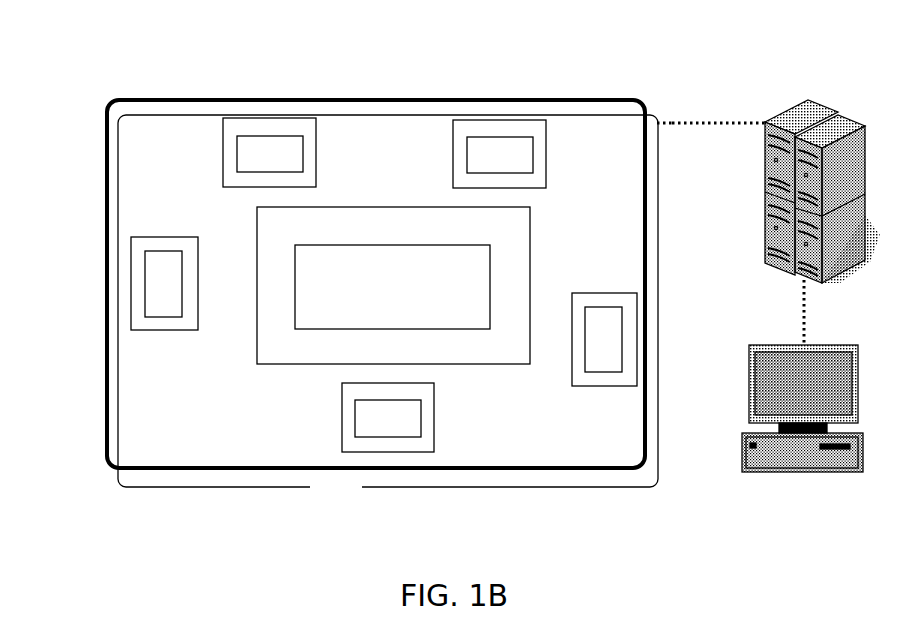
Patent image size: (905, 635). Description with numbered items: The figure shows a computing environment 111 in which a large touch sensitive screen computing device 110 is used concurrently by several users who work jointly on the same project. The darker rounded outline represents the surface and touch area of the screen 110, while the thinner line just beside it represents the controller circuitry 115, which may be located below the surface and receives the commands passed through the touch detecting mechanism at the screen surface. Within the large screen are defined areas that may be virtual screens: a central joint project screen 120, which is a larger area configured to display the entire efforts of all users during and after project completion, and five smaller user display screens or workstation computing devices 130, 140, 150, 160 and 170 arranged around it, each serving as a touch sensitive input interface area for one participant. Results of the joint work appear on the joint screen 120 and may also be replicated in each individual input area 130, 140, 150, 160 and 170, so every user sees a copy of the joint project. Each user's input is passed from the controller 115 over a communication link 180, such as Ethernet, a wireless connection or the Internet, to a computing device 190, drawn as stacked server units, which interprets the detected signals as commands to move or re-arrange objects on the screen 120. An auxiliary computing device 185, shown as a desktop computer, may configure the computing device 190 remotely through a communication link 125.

The computing environment 111 is at (55, 73).
The large touch sensitive screen computing device 110 is at (117, 99).
The workstation computing device 130 is at (282, 117).
The workstation computing device 140 is at (507, 120).
The joint project screen 120 is at (392, 207).
The workstation computing device 170 is at (131, 283).
The workstation computing device 150 is at (663, 332).
The workstation computing device 160 is at (390, 452).
The controller 115 is at (657, 123).
The communication link 180 is at (692, 118).
The computing device 190 is at (792, 102).
The communication link 125 is at (836, 313).
The auxiliary computing device 185 is at (764, 345).